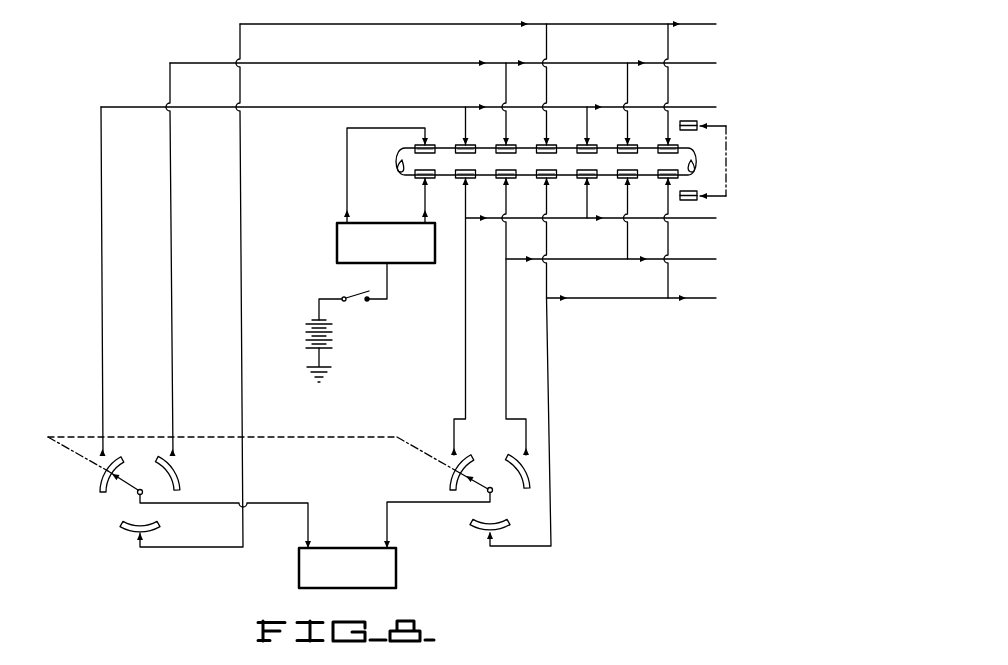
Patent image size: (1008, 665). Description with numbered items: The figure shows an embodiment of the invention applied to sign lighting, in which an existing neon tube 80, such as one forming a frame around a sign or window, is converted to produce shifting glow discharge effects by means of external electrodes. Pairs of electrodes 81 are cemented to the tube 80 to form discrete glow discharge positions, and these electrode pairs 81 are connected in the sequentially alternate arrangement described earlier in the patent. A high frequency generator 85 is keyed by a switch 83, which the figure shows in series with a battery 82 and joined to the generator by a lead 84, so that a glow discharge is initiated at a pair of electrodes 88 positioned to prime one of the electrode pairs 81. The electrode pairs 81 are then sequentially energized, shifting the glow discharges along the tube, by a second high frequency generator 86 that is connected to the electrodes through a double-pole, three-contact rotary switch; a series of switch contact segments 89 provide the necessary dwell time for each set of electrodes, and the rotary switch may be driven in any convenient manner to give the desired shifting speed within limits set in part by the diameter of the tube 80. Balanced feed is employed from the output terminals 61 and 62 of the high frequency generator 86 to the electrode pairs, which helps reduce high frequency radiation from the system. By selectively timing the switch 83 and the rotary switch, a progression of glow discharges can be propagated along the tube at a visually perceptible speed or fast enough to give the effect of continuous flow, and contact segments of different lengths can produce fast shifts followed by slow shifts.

The high frequency generator output terminal 61 is at (308, 528).
The high frequency generator output terminal 62 is at (387, 530).
The tube 80 is at (658, 147).
The electrode pairs 81 is at (592, 151).
The battery 82 is at (333, 342).
The switch 83 is at (357, 298).
The conductor 84 is at (387, 281).
The high frequency generator 85 is at (337, 243).
The high frequency generator 86 is at (345, 548).
The pair of electrodes 88 is at (436, 150).
The switch contact segments 89 is at (529, 492).